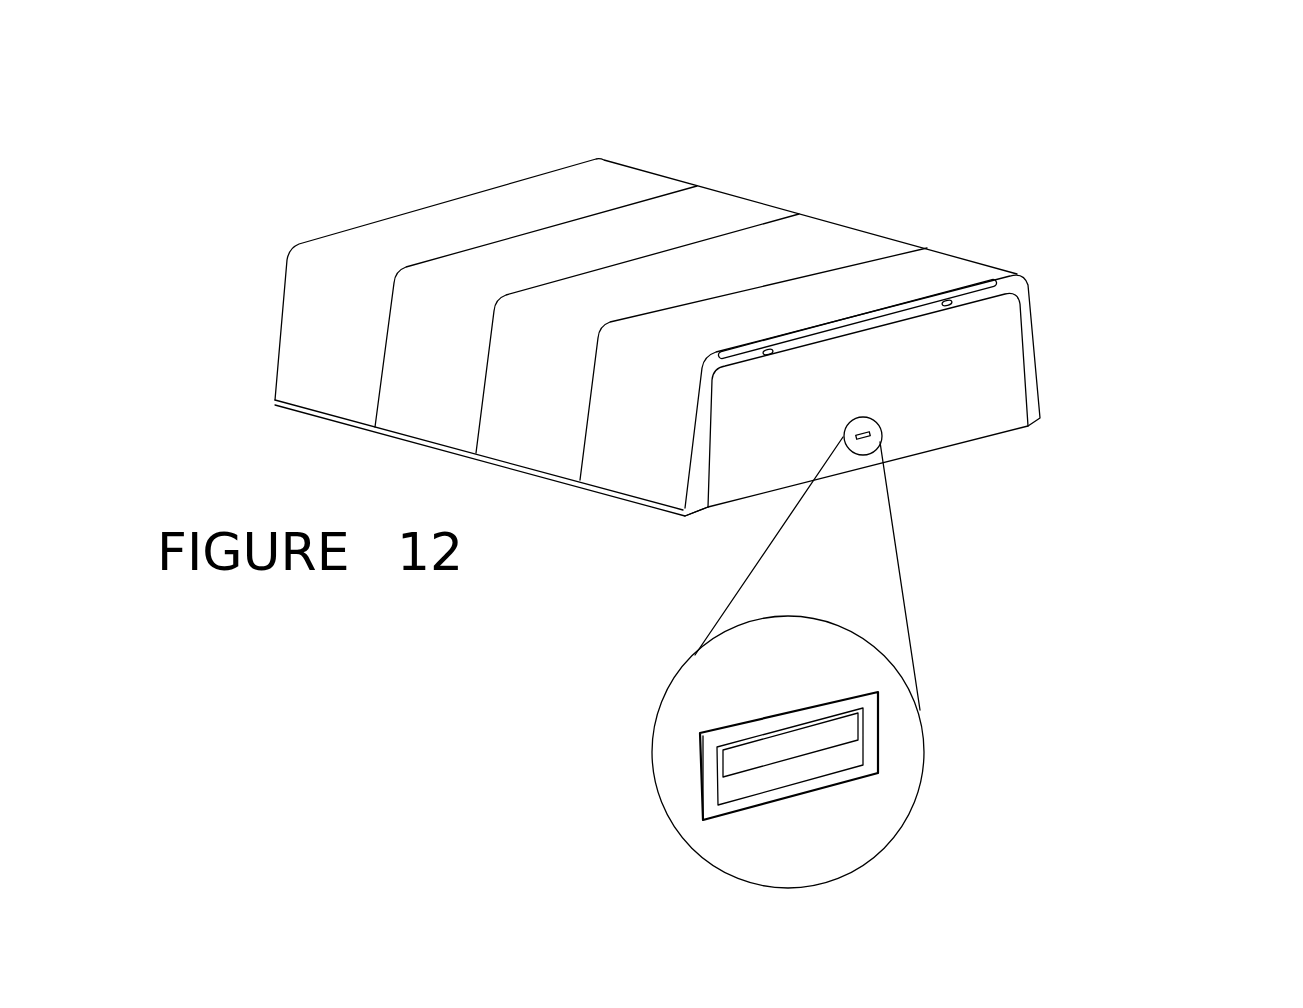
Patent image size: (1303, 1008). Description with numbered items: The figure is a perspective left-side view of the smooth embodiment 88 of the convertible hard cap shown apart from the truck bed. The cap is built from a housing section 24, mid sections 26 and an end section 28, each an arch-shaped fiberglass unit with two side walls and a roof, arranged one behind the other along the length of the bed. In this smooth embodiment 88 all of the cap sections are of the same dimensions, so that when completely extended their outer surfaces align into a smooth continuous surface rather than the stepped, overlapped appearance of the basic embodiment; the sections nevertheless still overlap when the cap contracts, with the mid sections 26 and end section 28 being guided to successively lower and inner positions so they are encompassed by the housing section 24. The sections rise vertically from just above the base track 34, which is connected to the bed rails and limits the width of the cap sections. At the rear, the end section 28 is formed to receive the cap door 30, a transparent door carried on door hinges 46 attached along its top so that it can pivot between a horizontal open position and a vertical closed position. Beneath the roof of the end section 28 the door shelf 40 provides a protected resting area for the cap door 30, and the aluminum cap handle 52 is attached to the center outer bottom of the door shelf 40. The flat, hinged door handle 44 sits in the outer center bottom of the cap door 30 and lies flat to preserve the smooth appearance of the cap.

The smooth embodiment 88 is at (467, 167).
The housing section 24 is at (617, 183).
The mid sections 26 is at (800, 233).
The end section 28 is at (935, 265).
The cap door 30 is at (983, 387).
The base track 34 is at (483, 462).
The door shelf 40 is at (993, 283).
The door handle 44 is at (877, 440).
The door hinge 46 is at (955, 308).
The cap handle 52 is at (789, 783).